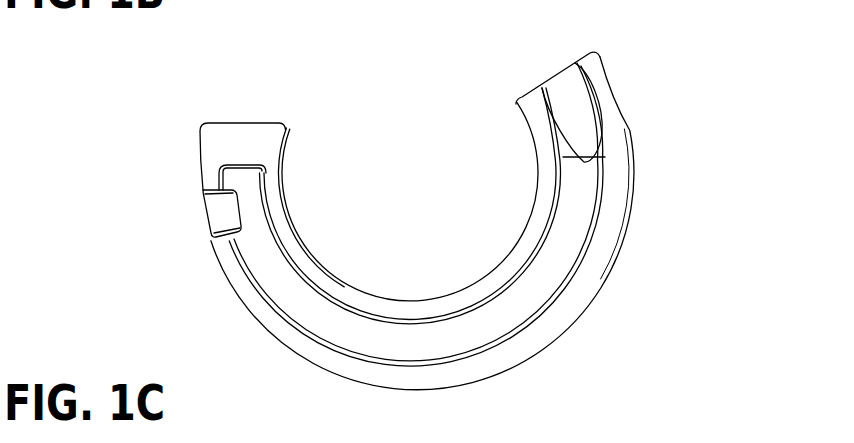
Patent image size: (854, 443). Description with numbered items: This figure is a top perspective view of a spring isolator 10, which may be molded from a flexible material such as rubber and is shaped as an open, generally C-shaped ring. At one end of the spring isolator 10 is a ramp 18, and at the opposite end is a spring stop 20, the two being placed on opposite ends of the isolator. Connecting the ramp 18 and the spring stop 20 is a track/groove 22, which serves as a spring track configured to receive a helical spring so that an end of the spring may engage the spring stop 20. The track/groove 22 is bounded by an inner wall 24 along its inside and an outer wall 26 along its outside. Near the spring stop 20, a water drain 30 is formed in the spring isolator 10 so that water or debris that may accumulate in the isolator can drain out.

The spring isolator 10 is at (670, 127).
The ramp 18 is at (550, 73).
The spring stop 20 is at (237, 165).
The track/groove 22 is at (460, 334).
The inner wall 24 is at (553, 215).
The outer wall 26 is at (606, 222).
The water drain 30 is at (207, 224).